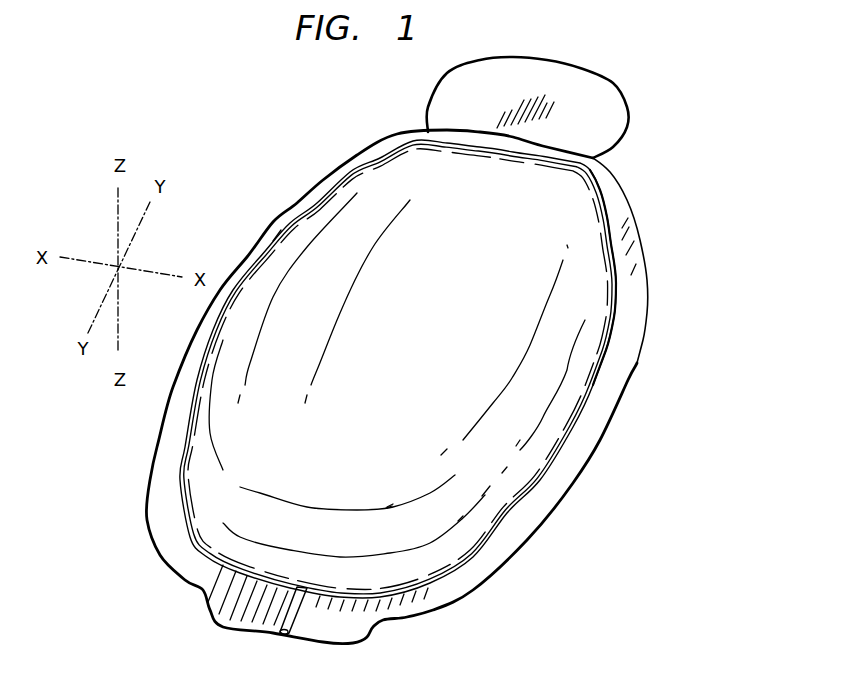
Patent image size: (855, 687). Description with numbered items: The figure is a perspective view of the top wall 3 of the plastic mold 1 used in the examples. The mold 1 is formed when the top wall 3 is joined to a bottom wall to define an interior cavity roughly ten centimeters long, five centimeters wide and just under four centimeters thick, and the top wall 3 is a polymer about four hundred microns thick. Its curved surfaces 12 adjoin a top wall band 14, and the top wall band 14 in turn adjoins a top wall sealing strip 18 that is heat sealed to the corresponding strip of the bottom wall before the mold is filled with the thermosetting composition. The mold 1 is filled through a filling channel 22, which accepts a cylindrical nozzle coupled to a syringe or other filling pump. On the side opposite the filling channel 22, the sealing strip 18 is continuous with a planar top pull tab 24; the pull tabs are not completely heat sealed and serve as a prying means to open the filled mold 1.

The mold 1 is at (727, 158).
The top wall 3 is at (310, 252).
The curved surfaces 12 is at (399, 352).
The top wall band 14 is at (517, 440).
The top wall sealing strip 18 is at (597, 423).
The filling channel 22 is at (273, 642).
The top pull tab 24 is at (584, 117).